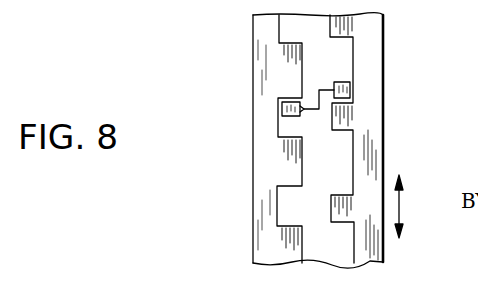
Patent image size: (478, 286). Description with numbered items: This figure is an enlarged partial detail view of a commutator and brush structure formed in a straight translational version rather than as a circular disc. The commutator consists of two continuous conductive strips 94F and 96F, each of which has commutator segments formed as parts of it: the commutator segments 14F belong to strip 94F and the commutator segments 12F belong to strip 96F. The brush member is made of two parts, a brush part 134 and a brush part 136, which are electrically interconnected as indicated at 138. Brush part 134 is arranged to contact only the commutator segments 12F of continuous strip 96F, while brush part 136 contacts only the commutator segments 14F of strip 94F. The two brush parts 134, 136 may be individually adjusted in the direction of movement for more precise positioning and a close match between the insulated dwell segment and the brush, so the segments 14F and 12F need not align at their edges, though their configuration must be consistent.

The commutator segments 12F is at (296, 65).
The commutator segments 14F is at (346, 113).
The continuous conductive strip 94F is at (376, 97).
The continuous conductive strip 96F is at (255, 179).
The brush part 134 is at (282, 109).
The brush part 136 is at (352, 88).
The electrical interconnection 138 is at (318, 106).